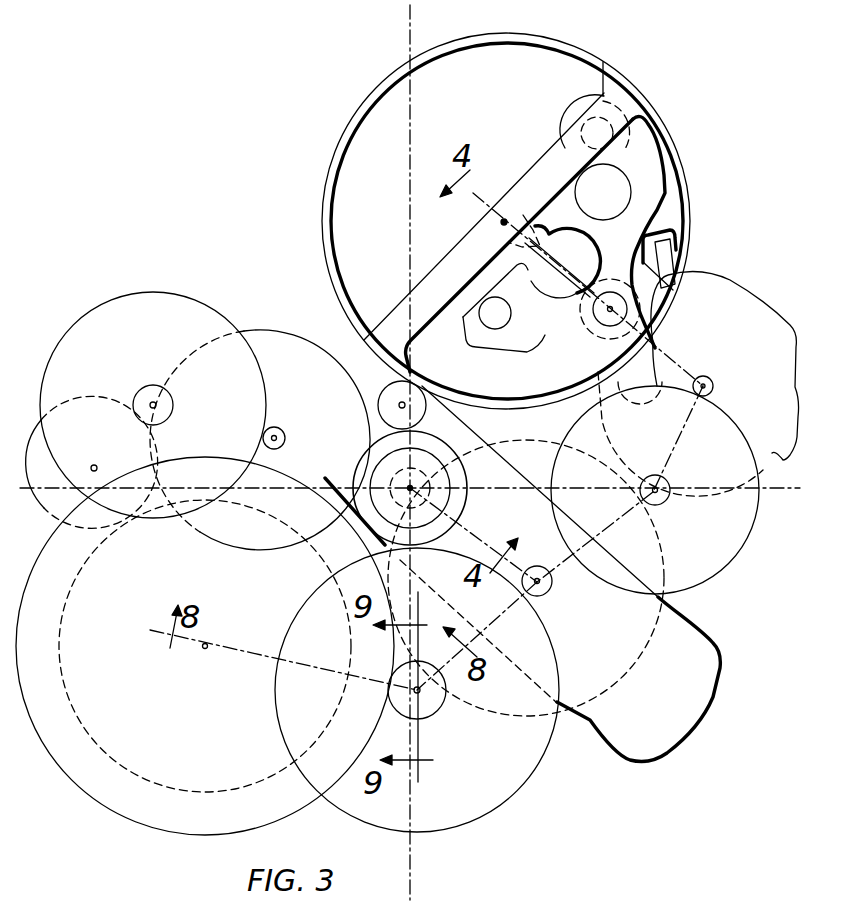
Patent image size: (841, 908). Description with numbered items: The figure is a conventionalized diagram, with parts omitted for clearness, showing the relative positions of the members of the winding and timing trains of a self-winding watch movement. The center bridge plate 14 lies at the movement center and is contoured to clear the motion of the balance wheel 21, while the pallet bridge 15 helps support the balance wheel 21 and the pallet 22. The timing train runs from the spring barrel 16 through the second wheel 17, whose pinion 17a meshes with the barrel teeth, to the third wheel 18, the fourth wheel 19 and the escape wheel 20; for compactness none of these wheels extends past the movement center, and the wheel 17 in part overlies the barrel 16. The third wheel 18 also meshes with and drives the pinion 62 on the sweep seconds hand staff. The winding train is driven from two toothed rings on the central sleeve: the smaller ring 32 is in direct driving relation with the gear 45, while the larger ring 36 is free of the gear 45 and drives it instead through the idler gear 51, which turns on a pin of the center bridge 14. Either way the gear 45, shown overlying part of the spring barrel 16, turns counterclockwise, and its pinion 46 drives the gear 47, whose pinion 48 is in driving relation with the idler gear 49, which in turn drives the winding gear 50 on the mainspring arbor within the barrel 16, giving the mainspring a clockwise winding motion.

The center bridge plate 14 is at (318, 328).
The pallet bridge 15 is at (643, 165).
The spring barrel 16 is at (92, 798).
The second wheel 17 is at (523, 785).
The pinion of second wheel 17a is at (438, 711).
The third wheel 18 is at (644, 655).
The fourth wheel 19 is at (722, 570).
The escape wheel 20 is at (772, 453).
The balance wheel 21 is at (627, 82).
The pallet 22 is at (665, 232).
The toothed ring 32 is at (452, 503).
The toothed ring 36 is at (364, 461).
The gear 45 is at (262, 323).
The pinion 46 is at (279, 428).
The gear 47 is at (163, 292).
The pinion 48 is at (153, 386).
The idler gear 49 is at (43, 440).
The winding gear 50 is at (62, 666).
The idler gear 51 is at (421, 394).
The pinion 62 is at (428, 474).